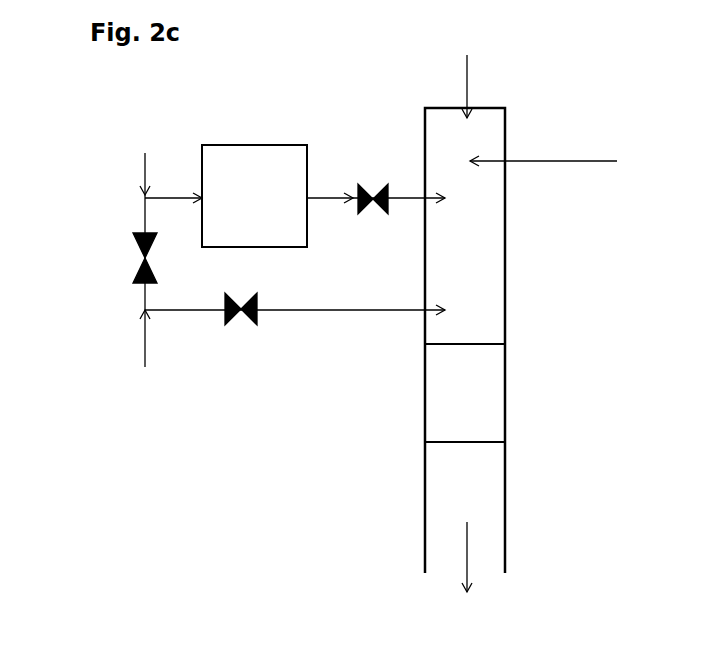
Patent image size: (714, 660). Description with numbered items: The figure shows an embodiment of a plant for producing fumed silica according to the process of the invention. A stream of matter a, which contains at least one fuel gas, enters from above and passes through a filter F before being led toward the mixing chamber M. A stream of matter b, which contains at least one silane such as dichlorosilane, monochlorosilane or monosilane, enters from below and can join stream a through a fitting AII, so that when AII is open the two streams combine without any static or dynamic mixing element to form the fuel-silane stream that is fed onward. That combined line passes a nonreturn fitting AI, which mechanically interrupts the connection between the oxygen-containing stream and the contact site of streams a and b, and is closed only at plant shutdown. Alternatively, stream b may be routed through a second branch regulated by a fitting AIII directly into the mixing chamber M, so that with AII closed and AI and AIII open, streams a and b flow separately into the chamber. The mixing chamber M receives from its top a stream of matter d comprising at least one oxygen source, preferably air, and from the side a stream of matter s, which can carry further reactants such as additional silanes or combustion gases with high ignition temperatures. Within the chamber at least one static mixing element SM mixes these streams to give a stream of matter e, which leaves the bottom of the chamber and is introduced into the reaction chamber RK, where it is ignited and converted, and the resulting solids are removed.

The stream of matter a is at (171, 177).
The stream of matter b is at (146, 358).
The stream of matter d is at (467, 68).
The stream of matter e is at (465, 457).
The stream of matter s is at (555, 162).
The filter F is at (323, 196).
The nonreturn fitting AI is at (370, 230).
The fitting AII is at (105, 271).
The fitting AIII is at (295, 333).
The static mixing element SM is at (465, 393).
The mixing chamber M is at (526, 112).
The reaction chamber RK is at (468, 579).